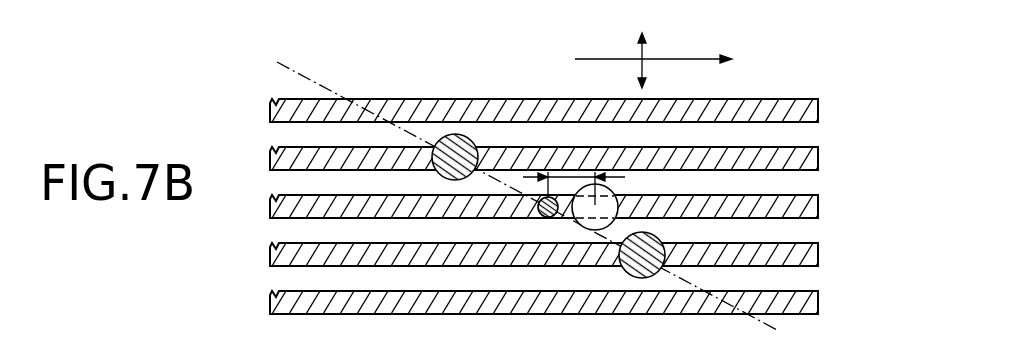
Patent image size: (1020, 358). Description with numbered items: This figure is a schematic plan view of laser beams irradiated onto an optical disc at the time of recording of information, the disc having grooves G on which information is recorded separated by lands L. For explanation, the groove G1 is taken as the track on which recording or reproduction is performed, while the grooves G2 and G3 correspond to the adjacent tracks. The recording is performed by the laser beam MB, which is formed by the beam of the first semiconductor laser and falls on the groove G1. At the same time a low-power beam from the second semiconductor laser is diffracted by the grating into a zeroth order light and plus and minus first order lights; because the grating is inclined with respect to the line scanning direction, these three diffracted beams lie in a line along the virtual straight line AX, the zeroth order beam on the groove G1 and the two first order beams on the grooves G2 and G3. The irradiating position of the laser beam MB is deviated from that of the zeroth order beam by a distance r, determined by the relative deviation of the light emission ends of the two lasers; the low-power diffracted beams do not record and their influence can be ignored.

The virtual straight line AX is at (508, 189).
The laser beam MB is at (583, 230).
The groove G is at (820, 110).
The groove G1 is at (820, 206).
The groove G2 is at (820, 160).
The groove G3 is at (820, 254).
The land L is at (273, 133).
The distance r is at (581, 186).